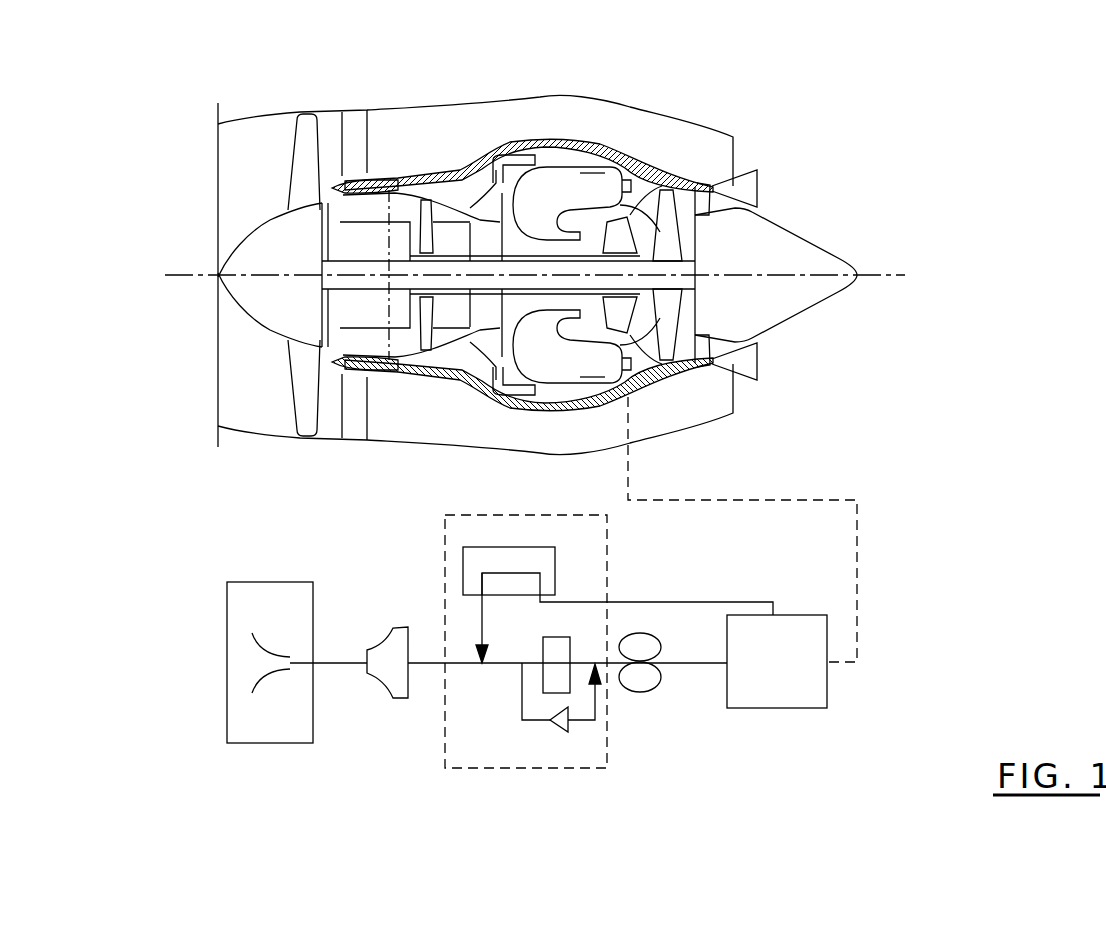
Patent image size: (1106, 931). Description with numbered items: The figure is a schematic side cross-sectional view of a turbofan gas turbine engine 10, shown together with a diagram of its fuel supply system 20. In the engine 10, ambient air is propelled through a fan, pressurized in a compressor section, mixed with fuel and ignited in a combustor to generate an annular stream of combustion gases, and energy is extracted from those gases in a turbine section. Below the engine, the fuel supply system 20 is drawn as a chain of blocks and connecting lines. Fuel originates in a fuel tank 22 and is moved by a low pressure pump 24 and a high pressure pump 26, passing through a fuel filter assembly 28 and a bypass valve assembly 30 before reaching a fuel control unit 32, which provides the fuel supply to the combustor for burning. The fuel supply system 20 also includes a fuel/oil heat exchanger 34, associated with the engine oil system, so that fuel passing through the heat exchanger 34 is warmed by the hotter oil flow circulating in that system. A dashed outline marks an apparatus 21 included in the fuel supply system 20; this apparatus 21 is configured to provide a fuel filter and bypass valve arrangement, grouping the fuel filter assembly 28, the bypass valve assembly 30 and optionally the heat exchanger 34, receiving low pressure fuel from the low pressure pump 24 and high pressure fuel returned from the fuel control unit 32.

The turbofan gas turbine engine 10 is at (697, 102).
The fuel supply system 20 is at (304, 558).
The apparatus 21 is at (444, 598).
The fuel tank 22 is at (227, 720).
The low pressure pump 24 is at (371, 674).
The high pressure pump 26 is at (660, 682).
The fuel filter assembly 28 is at (543, 650).
The bypass valve assembly 30 is at (550, 734).
The fuel control unit 32 is at (827, 688).
The fuel/oil heat exchanger 34 is at (555, 557).